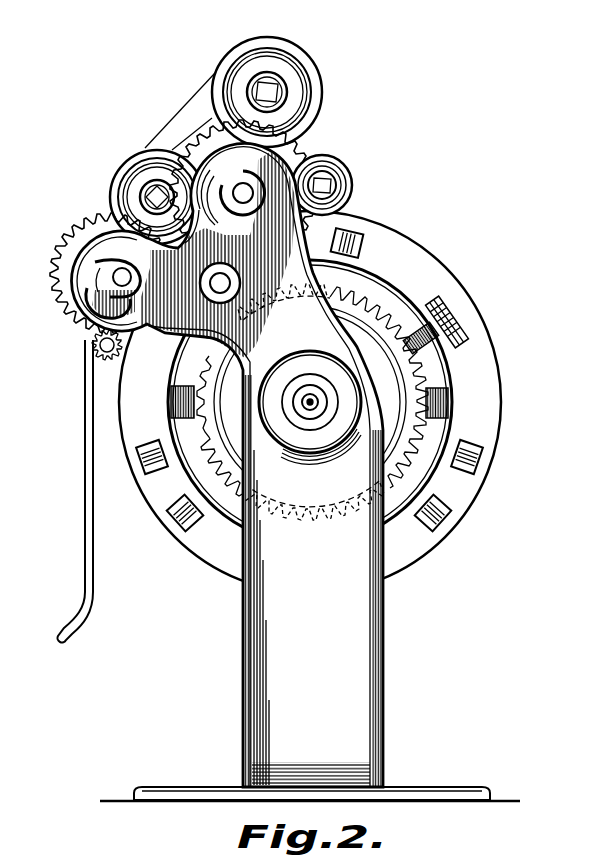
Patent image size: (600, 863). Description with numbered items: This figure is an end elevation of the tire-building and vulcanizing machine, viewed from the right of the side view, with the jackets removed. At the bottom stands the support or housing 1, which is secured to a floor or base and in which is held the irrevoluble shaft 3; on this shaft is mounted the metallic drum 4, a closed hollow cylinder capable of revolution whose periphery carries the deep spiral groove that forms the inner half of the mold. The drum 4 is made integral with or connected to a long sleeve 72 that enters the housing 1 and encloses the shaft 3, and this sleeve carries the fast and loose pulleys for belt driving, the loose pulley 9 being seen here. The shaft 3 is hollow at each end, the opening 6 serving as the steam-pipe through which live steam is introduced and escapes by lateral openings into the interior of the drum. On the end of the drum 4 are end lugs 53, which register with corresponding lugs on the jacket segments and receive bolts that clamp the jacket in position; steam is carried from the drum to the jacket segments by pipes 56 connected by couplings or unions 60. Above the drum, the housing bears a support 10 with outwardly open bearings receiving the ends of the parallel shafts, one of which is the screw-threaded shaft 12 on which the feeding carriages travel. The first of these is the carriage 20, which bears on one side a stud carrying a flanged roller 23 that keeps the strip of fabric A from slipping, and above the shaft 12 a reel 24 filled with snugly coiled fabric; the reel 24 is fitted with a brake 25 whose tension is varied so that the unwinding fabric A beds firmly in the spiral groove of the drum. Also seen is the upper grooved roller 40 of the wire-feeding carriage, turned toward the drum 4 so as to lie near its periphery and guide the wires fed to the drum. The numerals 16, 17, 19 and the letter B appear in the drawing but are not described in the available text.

The support or housing 1 is at (383, 642).
The irrevoluble shaft 3 is at (319, 402).
The drum 4 is at (319, 402).
The opening or steam-pipe 6 is at (300, 402).
The loose pulley 9 is at (420, 516).
The support 10 is at (244, 312).
The parallel shaft 12 is at (238, 184).
The gear 16 is at (300, 152).
The gear 17 is at (50, 278).
The gear wheel 19 is at (420, 370).
The carriage 20 is at (198, 126).
The roller 23 is at (112, 192).
The reel 24 is at (274, 89).
The brake 25 is at (118, 275).
The upper grooved roller 40 is at (353, 189).
The end lug 53 is at (360, 244).
The pipe 56 is at (426, 346).
The coupling or union 60 is at (450, 332).
The sleeve 72 is at (296, 386).
The strip of fabric A is at (205, 92).
The handle B is at (84, 492).